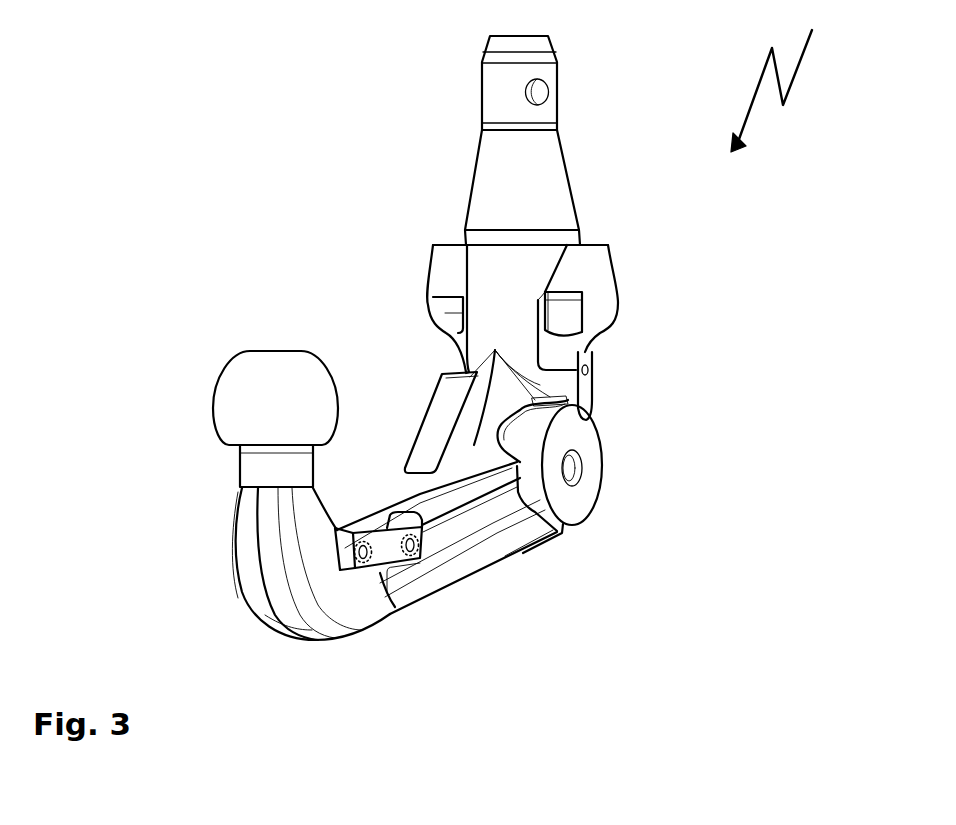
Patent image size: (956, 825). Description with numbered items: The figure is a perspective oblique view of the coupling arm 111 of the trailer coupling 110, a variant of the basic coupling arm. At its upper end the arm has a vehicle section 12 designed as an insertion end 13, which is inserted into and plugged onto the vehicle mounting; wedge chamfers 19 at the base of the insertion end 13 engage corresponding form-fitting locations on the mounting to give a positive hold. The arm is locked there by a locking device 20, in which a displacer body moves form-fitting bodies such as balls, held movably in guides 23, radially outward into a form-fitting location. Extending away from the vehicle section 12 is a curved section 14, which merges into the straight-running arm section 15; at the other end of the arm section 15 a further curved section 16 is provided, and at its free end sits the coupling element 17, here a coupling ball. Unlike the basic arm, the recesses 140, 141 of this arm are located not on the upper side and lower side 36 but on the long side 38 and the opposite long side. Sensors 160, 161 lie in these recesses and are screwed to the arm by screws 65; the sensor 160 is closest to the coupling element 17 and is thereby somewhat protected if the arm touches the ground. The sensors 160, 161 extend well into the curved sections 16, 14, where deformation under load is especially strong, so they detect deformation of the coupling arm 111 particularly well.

The trailer coupling 110 is at (786, 77).
The locking device 20 is at (488, 91).
The guides 23 is at (548, 92).
The insertion end 13 is at (495, 160).
The vehicle section 12 is at (560, 187).
The wedge chamfers 19 is at (438, 272).
The curved section 14 is at (597, 410).
The coupling element 17 is at (287, 362).
The curved section 16 is at (262, 585).
The sensor 161 is at (440, 395).
The recess 141 is at (455, 442).
The sensor 160 is at (377, 525).
The screws 65 is at (357, 567).
The recess 140 is at (373, 570).
The arm section 15 is at (470, 563).
The lower side 36 is at (510, 555).
The long side 38 is at (502, 555).
The coupling arm 111 is at (578, 510).